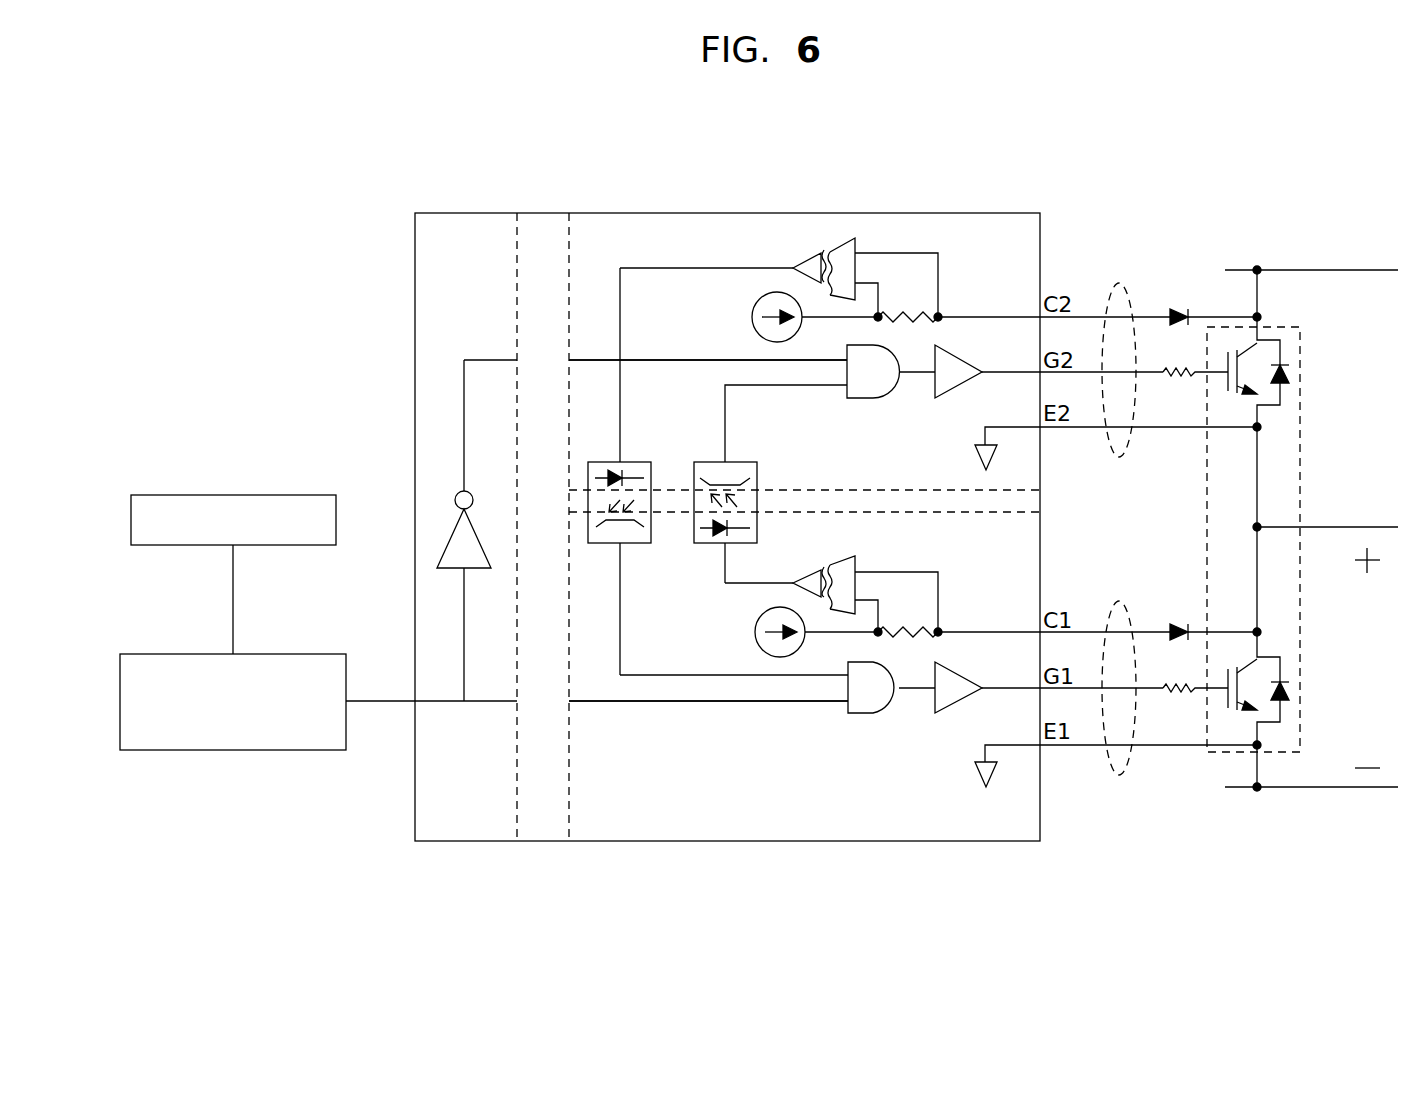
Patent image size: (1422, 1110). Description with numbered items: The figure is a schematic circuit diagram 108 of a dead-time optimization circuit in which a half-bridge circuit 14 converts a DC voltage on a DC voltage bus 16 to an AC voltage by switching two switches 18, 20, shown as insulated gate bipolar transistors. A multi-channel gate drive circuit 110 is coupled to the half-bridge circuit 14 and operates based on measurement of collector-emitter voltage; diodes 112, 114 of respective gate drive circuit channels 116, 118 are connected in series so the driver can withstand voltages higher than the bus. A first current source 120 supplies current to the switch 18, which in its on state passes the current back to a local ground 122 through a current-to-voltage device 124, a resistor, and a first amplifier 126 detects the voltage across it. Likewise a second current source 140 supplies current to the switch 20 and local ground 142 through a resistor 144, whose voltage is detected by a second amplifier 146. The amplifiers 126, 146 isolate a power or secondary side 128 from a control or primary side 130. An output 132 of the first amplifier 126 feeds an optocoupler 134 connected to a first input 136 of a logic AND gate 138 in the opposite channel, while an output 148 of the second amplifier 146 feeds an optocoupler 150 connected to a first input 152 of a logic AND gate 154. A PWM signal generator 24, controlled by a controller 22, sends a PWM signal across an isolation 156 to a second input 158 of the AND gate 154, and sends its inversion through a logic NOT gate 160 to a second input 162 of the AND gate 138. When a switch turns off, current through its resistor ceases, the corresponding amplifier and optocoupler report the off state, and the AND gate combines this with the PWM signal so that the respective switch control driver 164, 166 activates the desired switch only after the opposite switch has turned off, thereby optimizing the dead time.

The schematic circuit diagram 108 is at (718, 142).
The multi-channel gate drive circuit 110 is at (933, 213).
The isolation 156 is at (534, 286).
The control or primary side 130 is at (438, 748).
The power or secondary side 128 is at (694, 766).
The controller 22 is at (157, 495).
The PWM signal generator 24 is at (157, 750).
The logic NOT gate 160 is at (456, 498).
The optocoupler 150 is at (640, 460).
The optocoupler 134 is at (757, 471).
The output of second amplifier 148 is at (785, 265).
The output of first amplifier 132 is at (780, 583).
The second amplifier 146 is at (836, 248).
The first amplifier 126 is at (840, 558).
The current-to-voltage device 144 is at (917, 312).
The current-to-voltage device 124 is at (917, 630).
The second current source 140 is at (756, 304).
The first current source 120 is at (757, 620).
The second input of logic AND gate 138 162 is at (835, 344).
The second input of logic AND gate 154 158 is at (815, 676).
The first input of logic AND gate 138 136 is at (823, 390).
The first input of logic AND gate 154 152 is at (810, 705).
The logic AND gate 138 is at (862, 400).
The logic AND gate 154 is at (857, 715).
The switch control driver 166 is at (950, 402).
The switch control driver 164 is at (950, 715).
The local ground 142 is at (980, 452).
The local ground 122 is at (982, 789).
The gate drive circuit channel 118 is at (1119, 283).
The gate drive circuit channel 116 is at (1119, 601).
The diode 114 is at (1188, 300).
The diode 112 is at (1186, 623).
The half-bridge circuit 14 is at (1251, 534).
The switch 20 is at (1226, 378).
The switch 18 is at (1226, 694).
The DC voltage bus 16 is at (1327, 270).